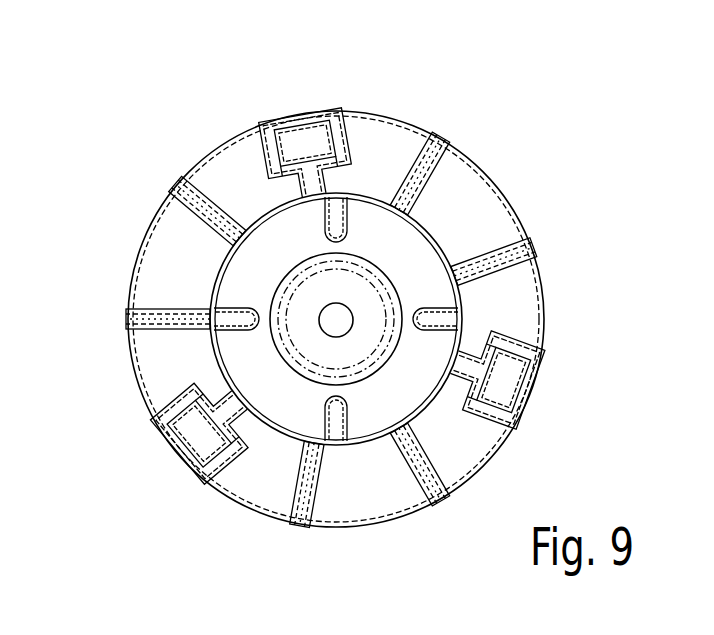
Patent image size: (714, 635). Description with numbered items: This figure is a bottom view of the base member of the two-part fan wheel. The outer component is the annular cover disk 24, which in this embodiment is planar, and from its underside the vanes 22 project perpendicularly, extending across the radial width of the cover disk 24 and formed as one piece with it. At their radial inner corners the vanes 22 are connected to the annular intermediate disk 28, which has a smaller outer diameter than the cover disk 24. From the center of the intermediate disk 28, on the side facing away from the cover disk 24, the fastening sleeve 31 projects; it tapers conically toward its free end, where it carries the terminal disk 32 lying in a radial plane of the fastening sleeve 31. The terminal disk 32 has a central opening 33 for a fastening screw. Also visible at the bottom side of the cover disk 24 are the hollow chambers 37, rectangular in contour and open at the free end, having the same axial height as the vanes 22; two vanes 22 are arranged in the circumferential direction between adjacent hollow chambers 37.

The vanes 22 is at (422, 184).
The cover disk 24 is at (465, 218).
The intermediate disk 28 is at (417, 370).
The fastening sleeve 31 is at (284, 338).
The terminal disk 32 is at (318, 343).
The opening 33 is at (340, 319).
The hollow chamber 37 is at (312, 142).